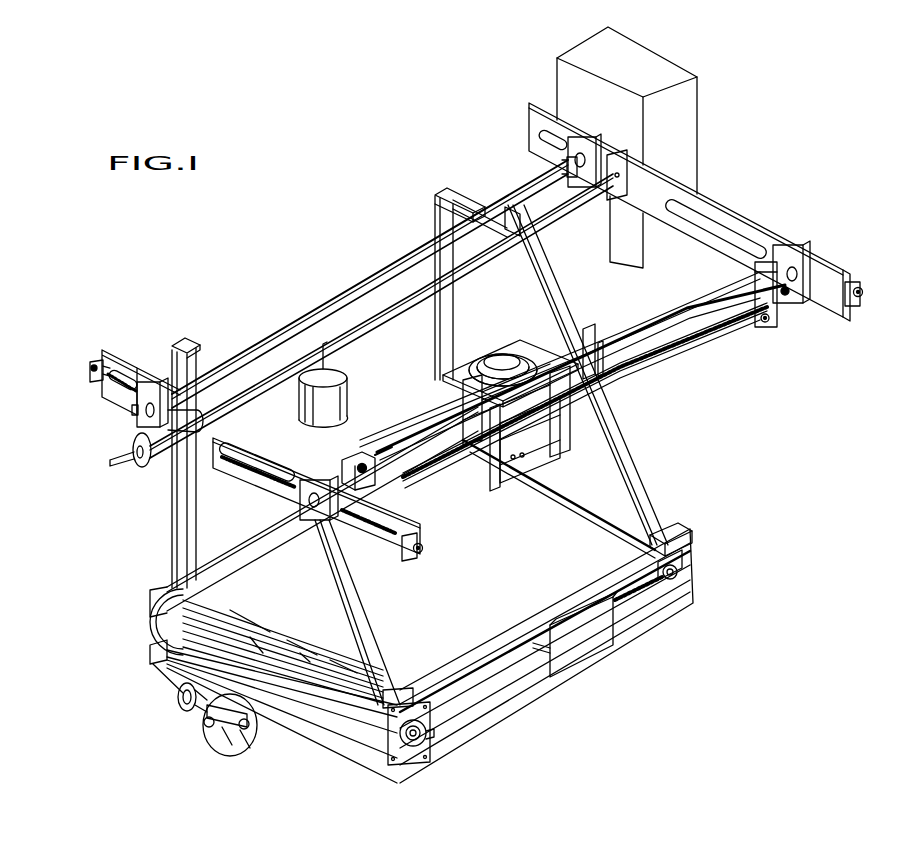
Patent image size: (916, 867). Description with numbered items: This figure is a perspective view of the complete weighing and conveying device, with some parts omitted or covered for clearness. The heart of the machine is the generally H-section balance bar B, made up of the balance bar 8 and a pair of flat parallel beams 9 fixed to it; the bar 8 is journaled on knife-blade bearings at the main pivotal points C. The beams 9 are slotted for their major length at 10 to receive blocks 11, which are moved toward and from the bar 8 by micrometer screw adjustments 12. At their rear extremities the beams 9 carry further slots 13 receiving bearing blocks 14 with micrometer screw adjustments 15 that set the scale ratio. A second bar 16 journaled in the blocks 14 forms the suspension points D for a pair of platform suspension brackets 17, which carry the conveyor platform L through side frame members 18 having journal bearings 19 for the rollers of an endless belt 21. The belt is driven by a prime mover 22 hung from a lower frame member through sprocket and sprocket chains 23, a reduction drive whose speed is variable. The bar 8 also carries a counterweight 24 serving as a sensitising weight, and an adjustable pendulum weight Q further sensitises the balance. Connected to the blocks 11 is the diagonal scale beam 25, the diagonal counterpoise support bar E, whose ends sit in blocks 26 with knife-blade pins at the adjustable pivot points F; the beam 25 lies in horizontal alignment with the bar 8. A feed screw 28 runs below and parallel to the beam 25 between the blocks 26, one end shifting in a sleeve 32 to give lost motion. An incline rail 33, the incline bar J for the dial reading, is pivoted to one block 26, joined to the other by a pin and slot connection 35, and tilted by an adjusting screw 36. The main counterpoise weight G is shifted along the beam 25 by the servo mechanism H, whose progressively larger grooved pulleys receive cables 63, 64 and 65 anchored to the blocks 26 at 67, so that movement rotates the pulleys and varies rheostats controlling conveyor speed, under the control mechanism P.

The balance bar 8 is at (398, 310).
The flat parallel beams 9 is at (740, 232).
The slot 10 is at (747, 238).
The blocks 11 is at (793, 262).
The micrometer screw adjustments 12 is at (863, 292).
The slot 13 is at (543, 136).
The bearing blocks 14 is at (150, 387).
The micrometer screw adjustments 15 is at (92, 366).
The second bar 16 is at (377, 283).
The platform suspension brackets 17 is at (560, 293).
The side frame members 18 is at (220, 554).
The journal bearings 19 is at (681, 572).
The endless belt 21 is at (582, 516).
The prime mover 22 is at (244, 750).
The sprocket and sprocket chains 23 is at (180, 695).
The counterweight 24 is at (350, 400).
The diagonal scale beam 25 is at (390, 457).
The blocks 26 is at (354, 463).
The feed screw 28 is at (742, 326).
The sleeve 32 is at (763, 322).
The incline rail 33 is at (415, 470).
The pin and slot connection 35 is at (789, 295).
The adjusting screw 36 is at (361, 462).
The cable 63 is at (655, 320).
The cable 64 is at (637, 328).
The cable 65 is at (610, 331).
The cable anchorage 67 is at (755, 278).
The balance bar B is at (712, 196).
The main pivotal points C is at (125, 447).
The suspension points D is at (565, 165).
The diagonal counterpoise support bar E is at (692, 308).
The adjustable pivot points F is at (802, 274).
The main counterpoise weight G is at (563, 422).
The servo mechanism H is at (505, 352).
The incline bar J is at (444, 464).
The conveyor platform L is at (556, 495).
The control mechanism P is at (700, 112).
The adjustable pendulum weight Q is at (347, 383).